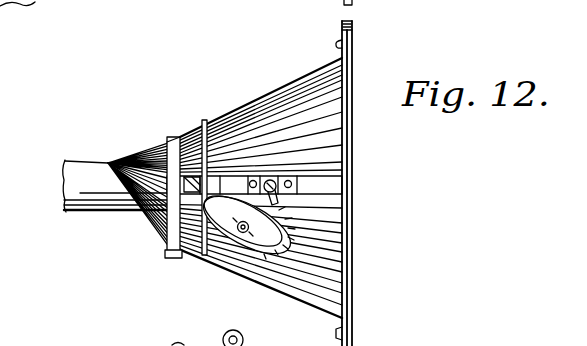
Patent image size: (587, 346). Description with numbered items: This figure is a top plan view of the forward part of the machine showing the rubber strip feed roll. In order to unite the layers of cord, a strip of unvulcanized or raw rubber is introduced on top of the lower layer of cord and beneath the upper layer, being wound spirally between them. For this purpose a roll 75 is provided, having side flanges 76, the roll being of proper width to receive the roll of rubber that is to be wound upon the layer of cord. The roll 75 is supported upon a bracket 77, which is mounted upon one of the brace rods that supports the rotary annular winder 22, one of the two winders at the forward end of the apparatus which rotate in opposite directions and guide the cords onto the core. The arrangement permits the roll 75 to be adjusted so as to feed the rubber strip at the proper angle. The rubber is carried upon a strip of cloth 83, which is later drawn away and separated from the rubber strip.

The rotary annular winder 22 is at (176, 135).
The roll 75 is at (291, 232).
The side flanges 76 is at (150, 188).
The bracket 77 is at (262, 203).
The strip of cloth 83 is at (160, 205).